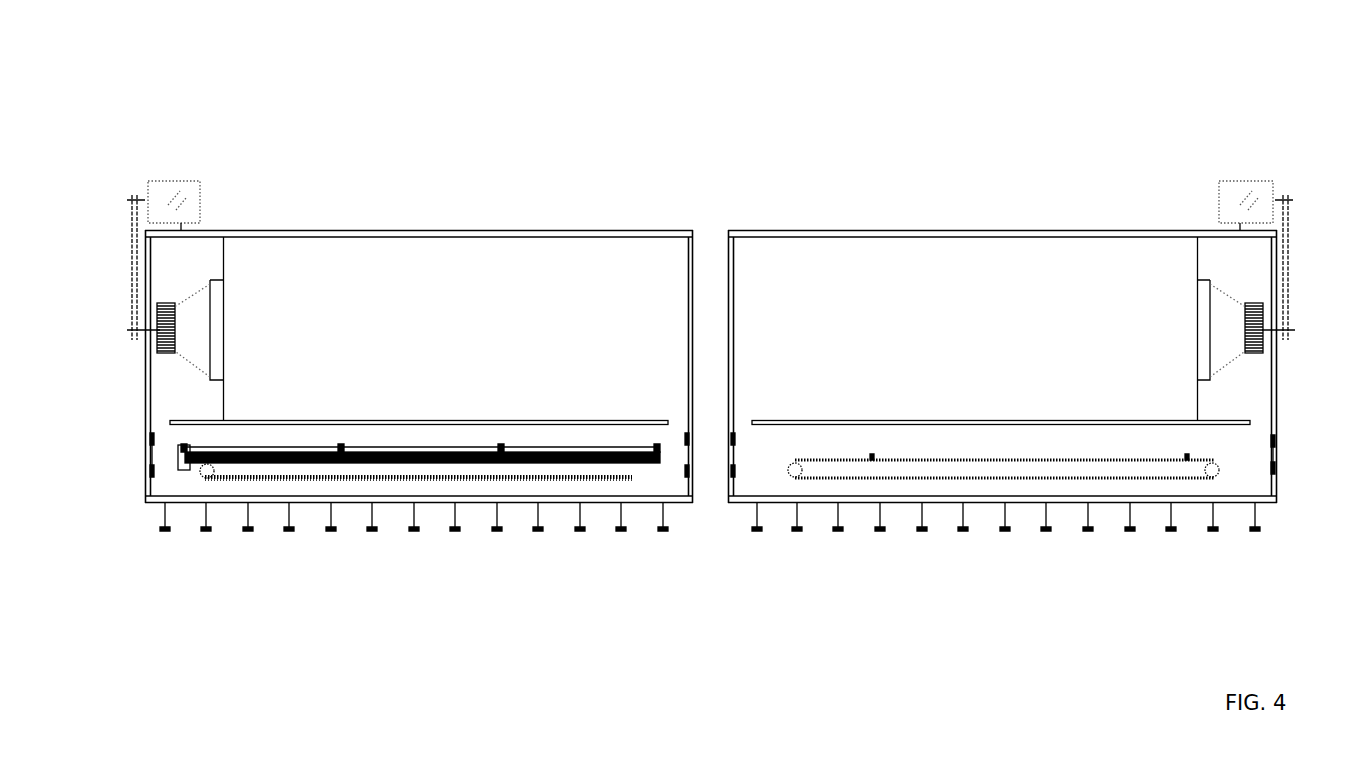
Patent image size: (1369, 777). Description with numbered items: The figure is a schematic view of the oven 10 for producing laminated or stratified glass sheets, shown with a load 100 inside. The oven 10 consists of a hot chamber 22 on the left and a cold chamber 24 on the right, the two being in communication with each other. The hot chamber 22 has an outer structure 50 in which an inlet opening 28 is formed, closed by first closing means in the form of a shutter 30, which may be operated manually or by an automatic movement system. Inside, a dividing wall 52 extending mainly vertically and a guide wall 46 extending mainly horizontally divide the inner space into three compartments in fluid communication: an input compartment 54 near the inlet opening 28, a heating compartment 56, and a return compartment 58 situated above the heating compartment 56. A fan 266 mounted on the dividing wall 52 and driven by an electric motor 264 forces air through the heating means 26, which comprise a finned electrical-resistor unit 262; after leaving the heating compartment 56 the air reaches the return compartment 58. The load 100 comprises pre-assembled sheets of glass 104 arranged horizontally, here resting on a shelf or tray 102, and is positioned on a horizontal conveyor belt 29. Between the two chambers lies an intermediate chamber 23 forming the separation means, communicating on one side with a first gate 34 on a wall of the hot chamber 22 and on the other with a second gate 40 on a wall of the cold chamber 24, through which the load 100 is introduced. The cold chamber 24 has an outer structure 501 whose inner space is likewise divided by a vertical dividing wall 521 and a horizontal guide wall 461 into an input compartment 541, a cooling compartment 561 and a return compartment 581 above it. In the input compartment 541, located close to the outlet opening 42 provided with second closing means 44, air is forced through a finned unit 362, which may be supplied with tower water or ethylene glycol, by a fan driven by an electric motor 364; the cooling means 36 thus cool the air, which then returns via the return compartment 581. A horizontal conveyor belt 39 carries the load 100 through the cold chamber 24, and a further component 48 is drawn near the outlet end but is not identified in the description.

The oven 10 is at (399, 226).
The hot chamber 22 is at (389, 334).
The intermediate chamber 23 is at (690, 481).
The cold chamber 24 is at (1010, 341).
The heating means 26 is at (167, 232).
The inlet opening 28 is at (144, 460).
The conveyor belt 29 is at (500, 478).
The shutter 30 is at (149, 447).
The first gate 34 is at (693, 443).
The cooling means 36 is at (1218, 242).
The conveyor belt 39 is at (1125, 481).
The second gate 40 is at (730, 451).
The outlet opening 42 is at (1284, 471).
The second closing means 44 is at (1280, 455).
The guide wall 46 is at (180, 426).
The belt end mount 48 is at (1232, 425).
The outer structure 50 is at (599, 233).
The dividing wall 52 is at (225, 403).
The input compartment 54 is at (176, 276).
The heating compartment 56 is at (404, 491).
The return compartment 58 is at (532, 293).
The load 100 is at (354, 467).
The shelf or tray 102 is at (186, 470).
The pre-assembled sheets of glass 104 is at (240, 450).
The finned electrical-resistor unit 262 is at (215, 297).
The electric motor 264 is at (140, 192).
The fan 266 is at (177, 323).
The finned unit 362 is at (1201, 295).
The electric motor 364 is at (1258, 208).
The guide wall 461 is at (893, 425).
The outer structure 501 is at (828, 233).
The dividing wall 521 is at (1200, 405).
The input compartment 541 is at (1244, 265).
The cooling compartment 561 is at (1024, 522).
The return compartment 581 is at (1029, 311).